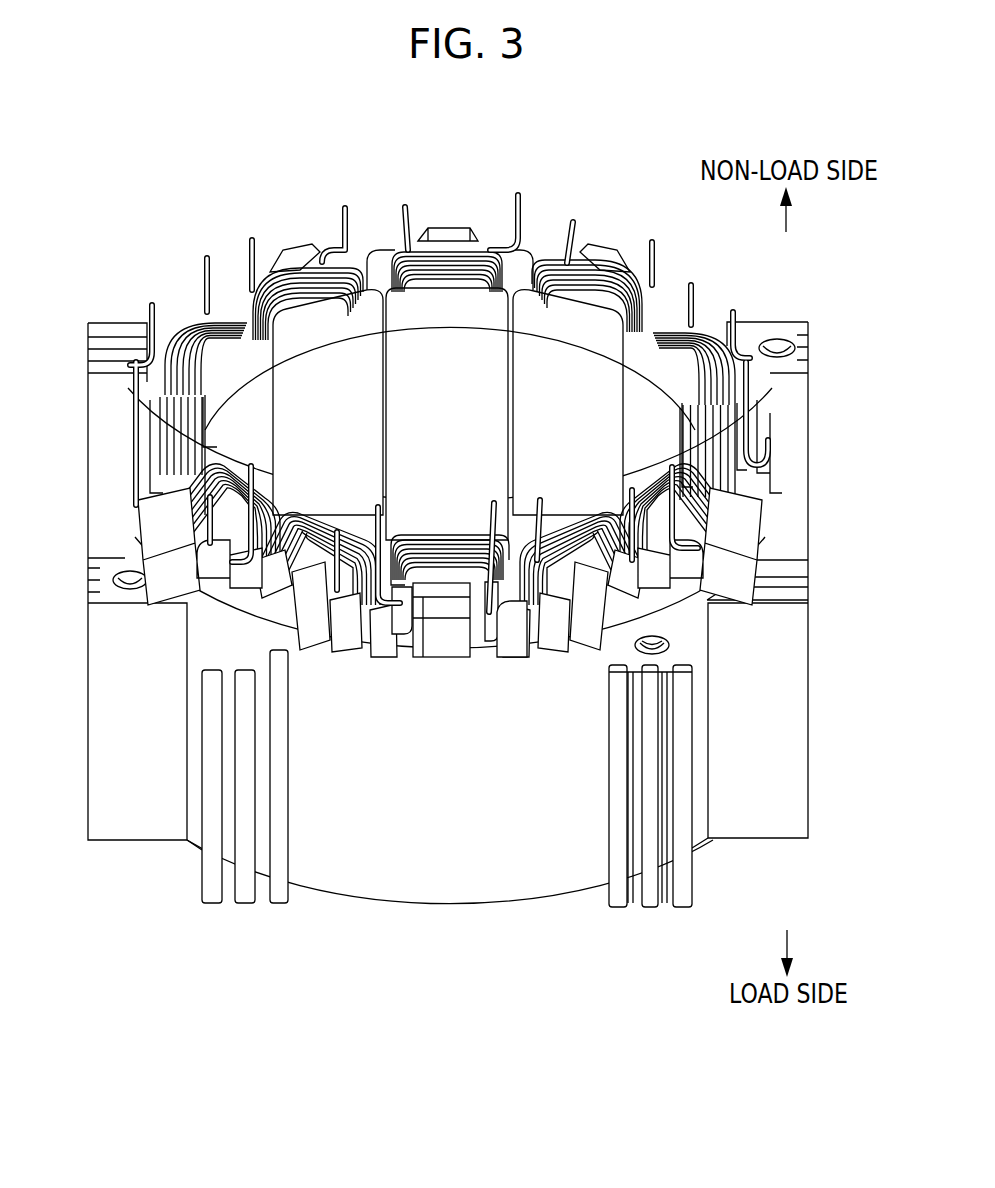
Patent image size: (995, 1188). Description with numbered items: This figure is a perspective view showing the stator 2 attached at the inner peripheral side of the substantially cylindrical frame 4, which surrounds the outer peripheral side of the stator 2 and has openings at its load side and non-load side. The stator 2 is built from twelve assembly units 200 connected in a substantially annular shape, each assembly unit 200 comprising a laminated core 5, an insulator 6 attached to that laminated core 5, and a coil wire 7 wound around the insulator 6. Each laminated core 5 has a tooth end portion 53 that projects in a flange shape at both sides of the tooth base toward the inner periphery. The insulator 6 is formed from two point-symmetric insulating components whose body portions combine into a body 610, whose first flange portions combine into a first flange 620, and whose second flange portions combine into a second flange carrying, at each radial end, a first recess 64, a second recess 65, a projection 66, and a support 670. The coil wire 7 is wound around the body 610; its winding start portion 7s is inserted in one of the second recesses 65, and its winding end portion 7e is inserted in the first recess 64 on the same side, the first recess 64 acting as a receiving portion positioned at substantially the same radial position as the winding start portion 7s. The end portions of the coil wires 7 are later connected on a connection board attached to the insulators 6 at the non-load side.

The stator 2 is at (172, 280).
The frame 4 is at (388, 847).
The laminated core 5 is at (480, 324).
The tooth end portion 53 is at (446, 352).
The insulator 6 is at (482, 534).
The coil wire 7 is at (298, 516).
The winding end portion 7e is at (252, 464).
The winding start portion 7s is at (339, 530).
The assembly unit 200 is at (446, 522).
The first flange 620 is at (405, 535).
The first recess 64 is at (410, 603).
The second recess 65 is at (495, 603).
The projection 66 is at (398, 600).
The support 670 is at (452, 605).
The body 610 is at (514, 636).